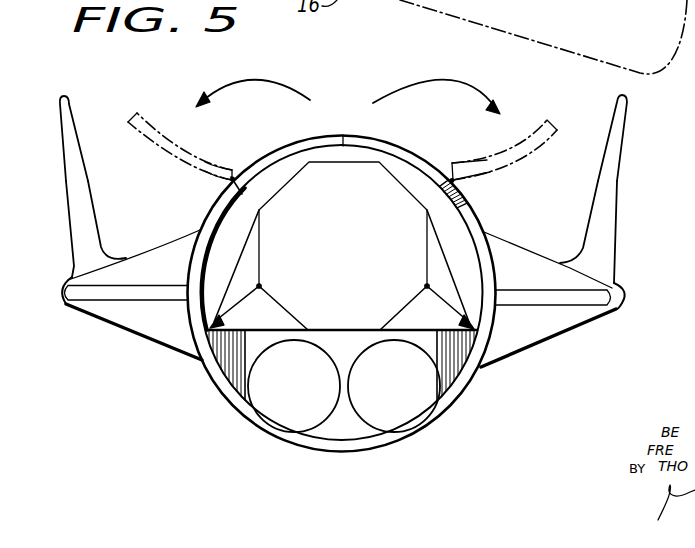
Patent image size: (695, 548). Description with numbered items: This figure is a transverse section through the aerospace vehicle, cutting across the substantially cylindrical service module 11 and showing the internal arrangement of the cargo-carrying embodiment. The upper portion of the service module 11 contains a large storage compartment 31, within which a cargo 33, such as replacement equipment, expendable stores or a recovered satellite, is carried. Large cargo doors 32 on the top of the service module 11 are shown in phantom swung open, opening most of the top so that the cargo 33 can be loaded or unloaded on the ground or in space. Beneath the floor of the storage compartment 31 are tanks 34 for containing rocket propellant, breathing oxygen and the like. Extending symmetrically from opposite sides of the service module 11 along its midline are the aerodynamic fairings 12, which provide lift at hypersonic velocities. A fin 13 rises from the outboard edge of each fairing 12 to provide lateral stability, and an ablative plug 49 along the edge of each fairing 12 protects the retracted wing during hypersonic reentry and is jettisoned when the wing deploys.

The service module 11 is at (469, 395).
The aerodynamic fairings 12 is at (183, 335).
The fins 13 is at (88, 209).
The storage compartment 31 is at (407, 174).
The cargo doors 32 is at (157, 142).
The cargo 33 is at (359, 244).
The tanks 34 is at (375, 410).
The ablative plug 49 is at (63, 302).